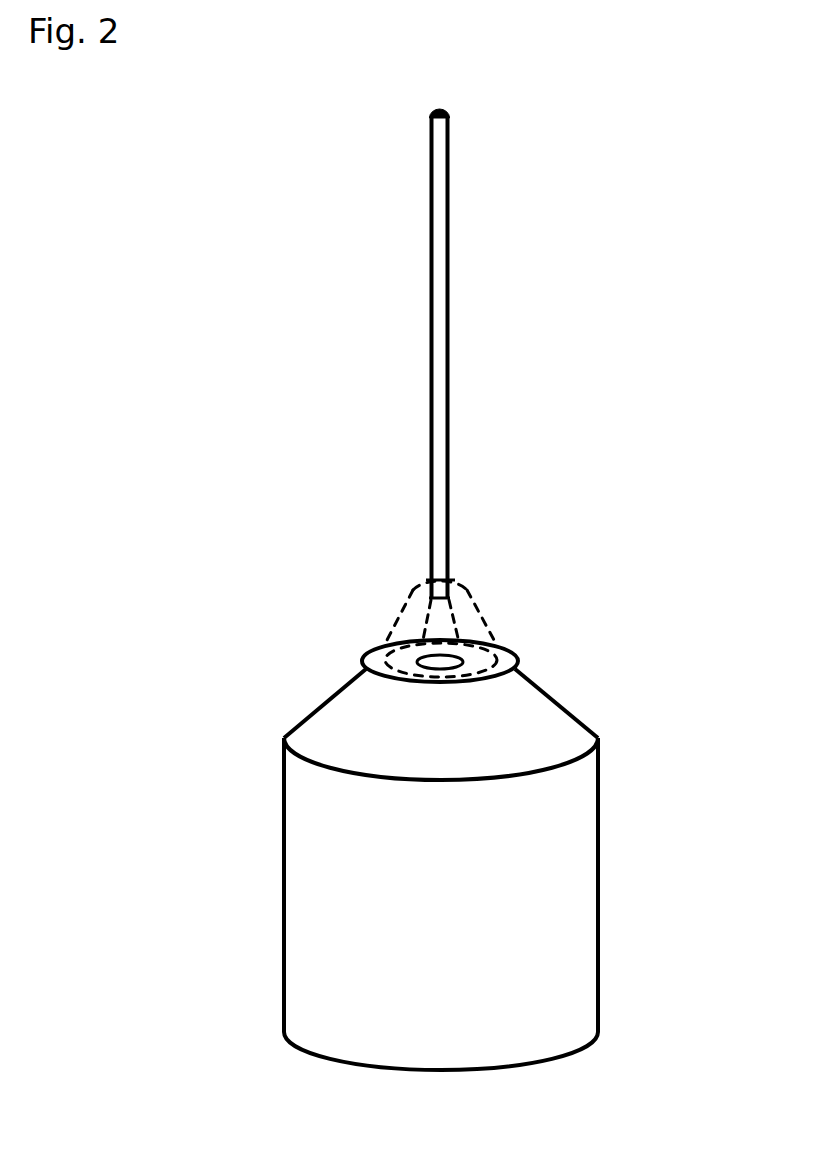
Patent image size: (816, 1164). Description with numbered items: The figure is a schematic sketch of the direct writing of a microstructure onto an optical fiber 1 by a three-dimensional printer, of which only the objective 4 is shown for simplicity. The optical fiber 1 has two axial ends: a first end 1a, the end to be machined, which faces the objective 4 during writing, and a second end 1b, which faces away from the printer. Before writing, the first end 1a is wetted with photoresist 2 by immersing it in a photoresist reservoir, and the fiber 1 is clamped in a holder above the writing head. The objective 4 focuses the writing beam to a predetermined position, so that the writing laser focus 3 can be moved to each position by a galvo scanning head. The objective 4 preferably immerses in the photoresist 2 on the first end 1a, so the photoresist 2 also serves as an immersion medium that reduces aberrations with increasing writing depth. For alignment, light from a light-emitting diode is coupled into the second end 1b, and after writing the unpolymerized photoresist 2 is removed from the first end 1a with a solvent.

The optical fiber 1 is at (449, 337).
The first end 1a is at (404, 564).
The second end 1b is at (463, 128).
The photoresist 2 is at (407, 620).
The writing laser focus 3 is at (438, 625).
The objective 4 is at (598, 876).